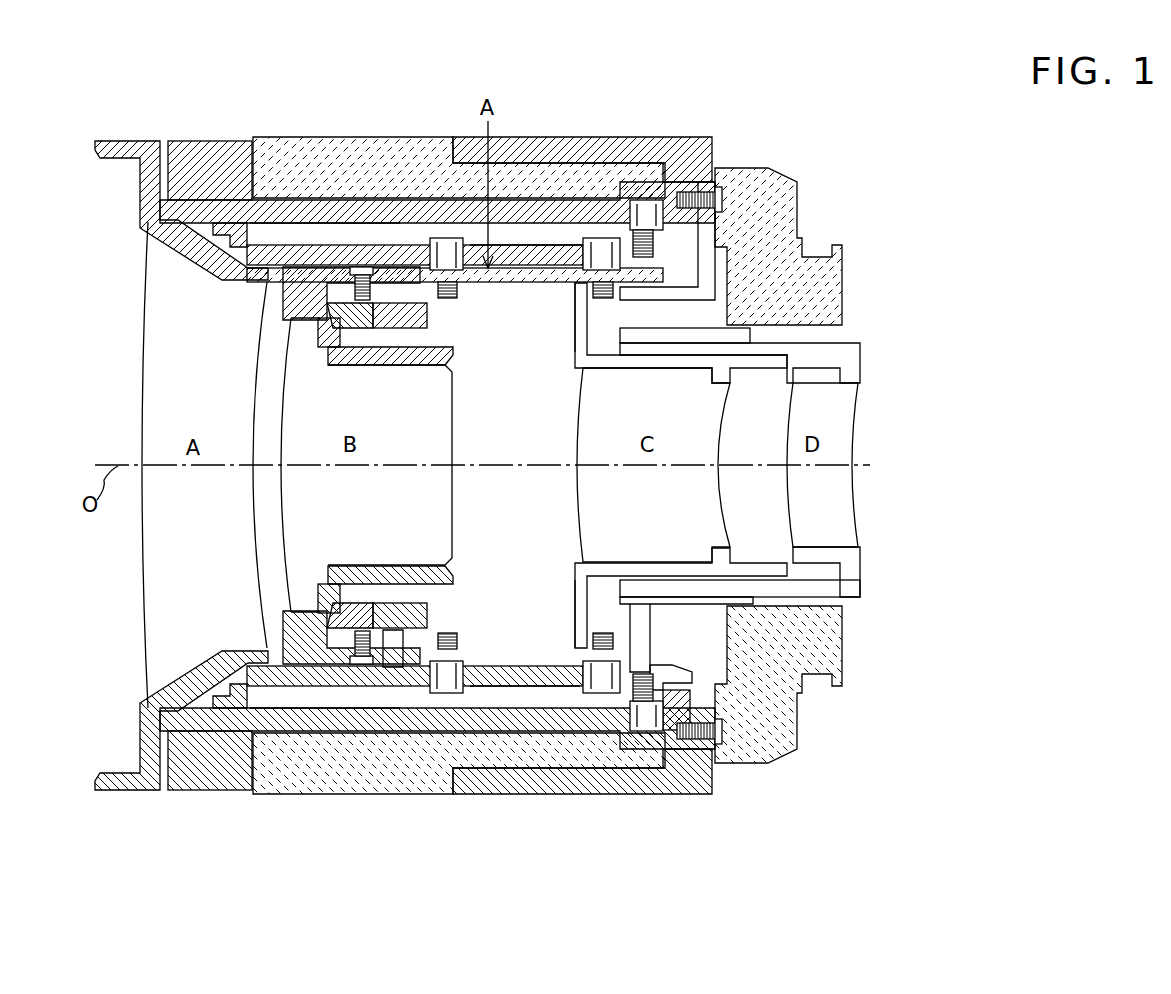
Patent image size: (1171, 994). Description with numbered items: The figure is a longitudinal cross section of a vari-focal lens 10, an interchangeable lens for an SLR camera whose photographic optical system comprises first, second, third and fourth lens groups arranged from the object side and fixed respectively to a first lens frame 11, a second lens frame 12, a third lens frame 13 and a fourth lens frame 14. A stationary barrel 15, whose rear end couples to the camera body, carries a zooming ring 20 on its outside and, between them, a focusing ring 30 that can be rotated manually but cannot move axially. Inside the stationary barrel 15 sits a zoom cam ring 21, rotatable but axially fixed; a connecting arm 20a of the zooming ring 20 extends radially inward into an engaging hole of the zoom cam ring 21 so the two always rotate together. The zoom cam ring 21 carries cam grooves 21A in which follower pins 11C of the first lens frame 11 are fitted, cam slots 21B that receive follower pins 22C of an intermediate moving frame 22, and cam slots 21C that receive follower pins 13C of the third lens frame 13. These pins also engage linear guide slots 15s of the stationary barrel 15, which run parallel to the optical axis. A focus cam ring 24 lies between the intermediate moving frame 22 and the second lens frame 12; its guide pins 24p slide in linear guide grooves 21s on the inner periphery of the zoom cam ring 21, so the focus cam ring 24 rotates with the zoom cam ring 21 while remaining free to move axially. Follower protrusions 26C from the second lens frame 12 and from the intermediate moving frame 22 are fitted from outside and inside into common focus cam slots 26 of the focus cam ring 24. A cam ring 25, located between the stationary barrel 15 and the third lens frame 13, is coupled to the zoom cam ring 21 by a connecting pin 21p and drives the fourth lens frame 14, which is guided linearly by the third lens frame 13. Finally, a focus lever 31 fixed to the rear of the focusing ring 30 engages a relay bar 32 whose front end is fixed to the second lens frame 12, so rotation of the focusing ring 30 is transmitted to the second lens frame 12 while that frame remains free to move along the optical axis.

The vari-focal lens 10 is at (805, 47).
The first lens frame 11 is at (152, 140).
The follower pins (third zoom followers) 11C is at (668, 176).
The second lens frame (focusing lens frame) 12 is at (410, 367).
The third lens frame 13 is at (582, 355).
The follower pins (second zoom followers) 13C is at (580, 243).
The fourth lens frame 14 is at (850, 350).
The stationary barrel 15 is at (325, 137).
The linear guide slots 15s is at (340, 225).
The zooming ring 20 is at (597, 137).
The connecting arm 20a is at (677, 698).
The zoom cam ring 21 is at (513, 265).
The cam grooves (third zoom cams) 21A is at (662, 675).
The cam slots (first zoom cams) 21B is at (463, 243).
The cam slots (second zoom cams) 21C is at (582, 688).
The connecting pin 21p is at (640, 627).
The linear guide grooves 21s is at (495, 668).
The intermediate moving frame 22 is at (432, 320).
The follower pins (first zoom followers) 22C is at (436, 240).
The focus cam ring 24 is at (328, 333).
The guide pins 24p is at (385, 700).
The cam ring 25 is at (672, 343).
The focus cam slots (focus cams) 26 is at (376, 303).
The follower protrusions (cam followers) 26C is at (345, 290).
The focusing ring 30 is at (222, 143).
The focus lever 31 is at (727, 236).
The relay bar 32 is at (548, 282).